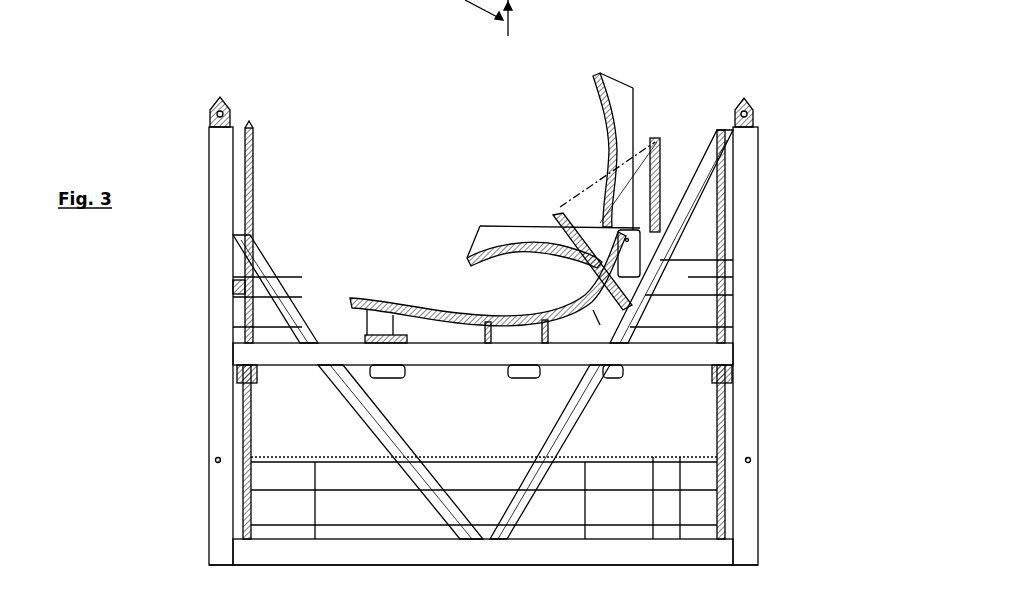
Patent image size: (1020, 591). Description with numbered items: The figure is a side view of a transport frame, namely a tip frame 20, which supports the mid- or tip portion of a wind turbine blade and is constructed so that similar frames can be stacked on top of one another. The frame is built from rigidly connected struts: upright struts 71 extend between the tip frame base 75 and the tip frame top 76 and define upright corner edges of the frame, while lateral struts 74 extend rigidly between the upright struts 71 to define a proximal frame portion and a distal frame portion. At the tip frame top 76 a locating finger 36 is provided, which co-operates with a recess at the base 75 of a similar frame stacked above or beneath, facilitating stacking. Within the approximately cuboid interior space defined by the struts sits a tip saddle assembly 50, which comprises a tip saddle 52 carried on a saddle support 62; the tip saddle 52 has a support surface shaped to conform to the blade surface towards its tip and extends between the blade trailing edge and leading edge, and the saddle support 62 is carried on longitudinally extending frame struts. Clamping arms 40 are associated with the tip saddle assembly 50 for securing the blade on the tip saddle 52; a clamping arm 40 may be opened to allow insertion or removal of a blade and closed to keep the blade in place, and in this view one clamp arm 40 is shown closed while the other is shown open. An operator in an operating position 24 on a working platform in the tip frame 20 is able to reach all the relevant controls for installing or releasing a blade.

The tip frame 20 is at (88, 108).
The operating position 24 is at (698, 98).
The locating finger 36 is at (219, 97).
The clamping arm 40 is at (502, 232).
The tip saddle assembly 50 is at (437, 190).
The tip saddle 52 is at (438, 303).
The saddle support 62 is at (460, 322).
The proximal upright strut 71 is at (219, 402).
The lateral strut 74 is at (247, 353).
The tip frame base 75 is at (188, 552).
The tip frame top 76 is at (797, 125).